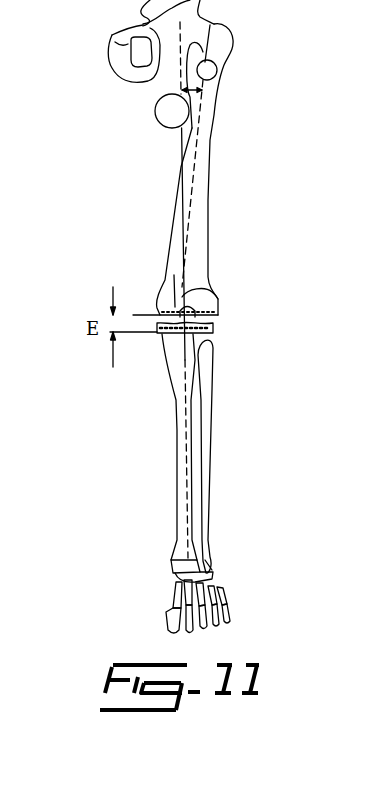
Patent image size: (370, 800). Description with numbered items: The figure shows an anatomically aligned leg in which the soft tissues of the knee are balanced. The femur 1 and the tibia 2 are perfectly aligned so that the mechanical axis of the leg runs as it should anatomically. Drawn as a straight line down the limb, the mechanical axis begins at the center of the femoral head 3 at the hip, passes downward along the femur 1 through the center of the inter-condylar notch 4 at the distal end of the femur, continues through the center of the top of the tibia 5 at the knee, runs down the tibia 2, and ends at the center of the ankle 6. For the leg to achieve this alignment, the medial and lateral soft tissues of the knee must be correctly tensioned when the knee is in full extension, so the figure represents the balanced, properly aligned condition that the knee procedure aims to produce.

The femur 1 is at (200, 143).
The tibia 2 is at (198, 468).
The femoral head 3 is at (150, 23).
The inter-condylar notch 4 is at (218, 300).
The top of the tibia 5 is at (175, 338).
The ankle 6 is at (210, 559).